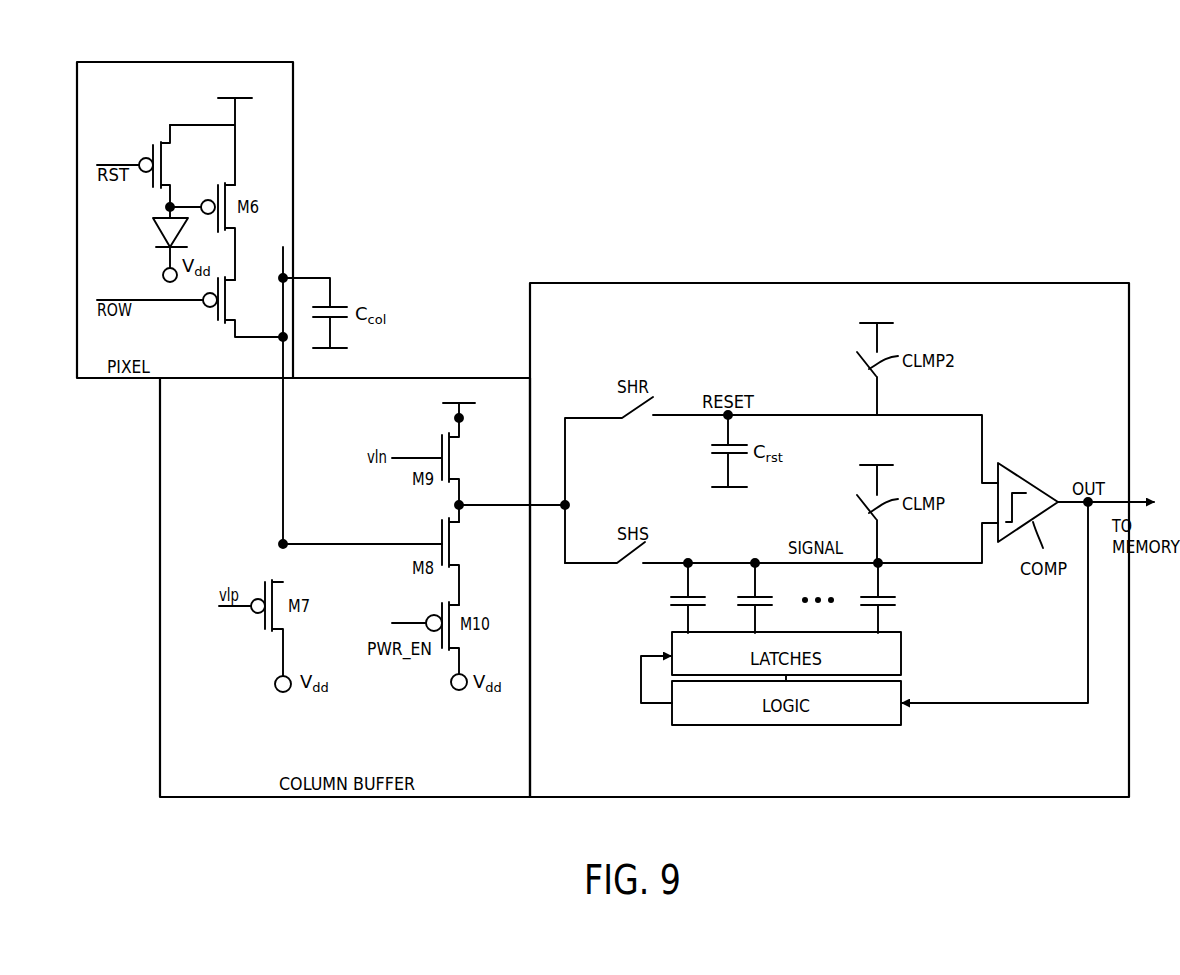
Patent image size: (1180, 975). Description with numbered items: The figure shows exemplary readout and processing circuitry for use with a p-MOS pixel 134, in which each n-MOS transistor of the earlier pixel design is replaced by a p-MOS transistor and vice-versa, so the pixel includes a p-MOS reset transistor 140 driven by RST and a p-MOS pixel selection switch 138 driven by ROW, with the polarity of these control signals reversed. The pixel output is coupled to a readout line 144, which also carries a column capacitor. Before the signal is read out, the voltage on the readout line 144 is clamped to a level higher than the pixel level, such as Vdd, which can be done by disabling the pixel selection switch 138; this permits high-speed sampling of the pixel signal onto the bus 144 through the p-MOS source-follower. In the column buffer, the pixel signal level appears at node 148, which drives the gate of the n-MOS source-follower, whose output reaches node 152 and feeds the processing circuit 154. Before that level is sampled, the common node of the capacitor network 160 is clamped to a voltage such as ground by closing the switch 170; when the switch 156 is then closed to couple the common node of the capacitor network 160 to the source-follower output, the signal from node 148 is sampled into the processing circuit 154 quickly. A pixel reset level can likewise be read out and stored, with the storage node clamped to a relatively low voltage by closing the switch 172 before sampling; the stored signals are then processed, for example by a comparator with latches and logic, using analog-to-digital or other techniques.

The p-MOS pixel 134 is at (293, 99).
The reset transistor 140 is at (146, 142).
The pixel selection switch 138 is at (221, 324).
The readout line 144 is at (285, 264).
The node 148 is at (295, 531).
The node 152 is at (572, 491).
The processing circuit 154 is at (735, 798).
The switch 156 is at (621, 571).
The capacitor network 160 is at (958, 600).
The switch 170 is at (854, 512).
The switch 172 is at (854, 371).